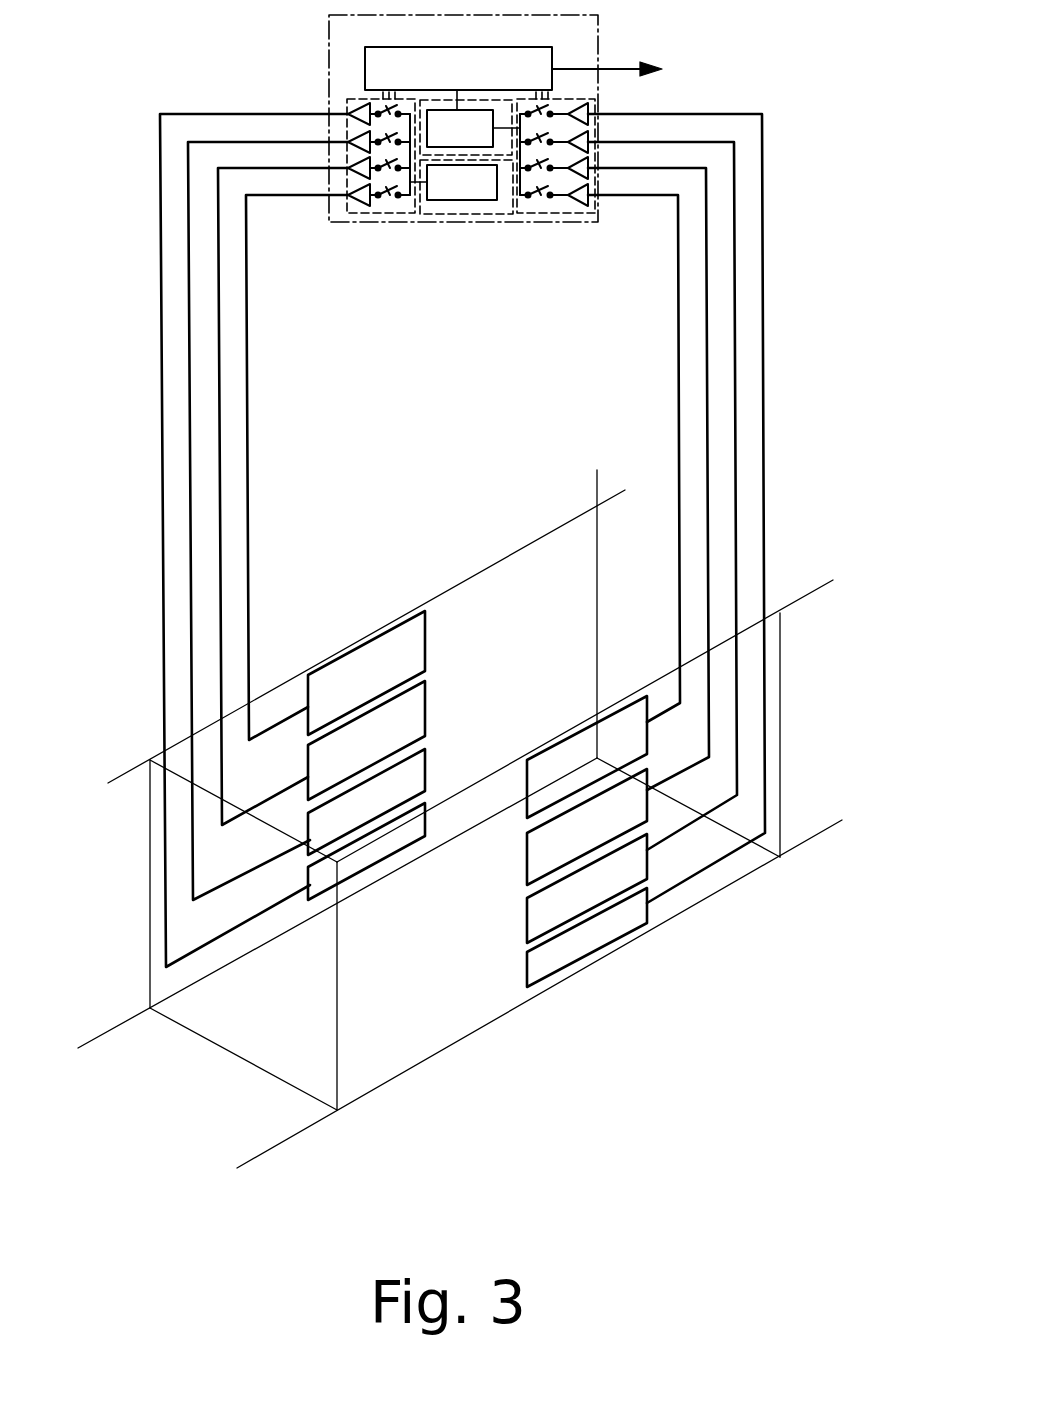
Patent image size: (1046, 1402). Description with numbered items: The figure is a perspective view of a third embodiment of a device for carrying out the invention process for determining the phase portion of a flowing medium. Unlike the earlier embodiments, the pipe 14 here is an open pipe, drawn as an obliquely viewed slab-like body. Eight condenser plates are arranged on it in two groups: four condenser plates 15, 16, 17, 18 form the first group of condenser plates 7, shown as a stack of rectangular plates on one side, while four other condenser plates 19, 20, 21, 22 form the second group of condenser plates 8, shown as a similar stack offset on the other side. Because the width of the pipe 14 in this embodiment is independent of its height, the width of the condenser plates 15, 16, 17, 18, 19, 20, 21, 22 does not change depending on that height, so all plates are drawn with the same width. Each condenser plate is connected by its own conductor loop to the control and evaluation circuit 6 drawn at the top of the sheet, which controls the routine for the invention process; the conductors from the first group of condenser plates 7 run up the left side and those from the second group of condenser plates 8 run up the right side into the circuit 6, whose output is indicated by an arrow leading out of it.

The control and evaluation circuit 6 is at (580, 37).
The first group of condenser plates 7 is at (360, 568).
The second group of condenser plates 8 is at (612, 972).
The pipe 14 is at (287, 1142).
The condenser plate 15 is at (463, 856).
The condenser plate 16 is at (428, 757).
The condenser plate 17 is at (428, 690).
The condenser plate 18 is at (428, 623).
The condenser plate 19 is at (543, 960).
The condenser plate 20 is at (543, 910).
The condenser plate 21 is at (538, 850).
The condenser plate 22 is at (540, 777).